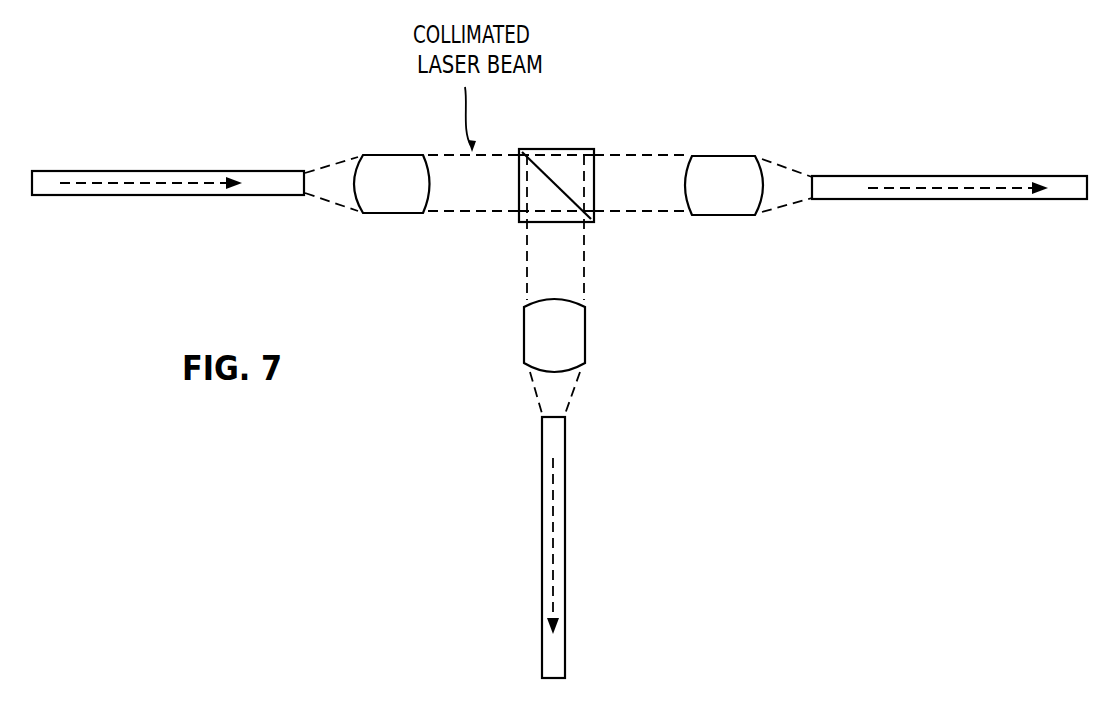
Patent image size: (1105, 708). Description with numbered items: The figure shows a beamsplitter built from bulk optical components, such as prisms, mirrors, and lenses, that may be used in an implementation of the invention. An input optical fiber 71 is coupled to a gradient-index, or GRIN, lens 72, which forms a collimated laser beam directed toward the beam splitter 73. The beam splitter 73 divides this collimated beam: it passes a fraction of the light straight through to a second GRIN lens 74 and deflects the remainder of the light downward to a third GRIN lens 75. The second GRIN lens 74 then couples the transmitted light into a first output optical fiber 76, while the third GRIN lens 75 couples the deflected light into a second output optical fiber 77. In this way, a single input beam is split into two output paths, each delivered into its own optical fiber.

The input optical fiber 71 is at (176, 165).
The gradient-index (GRIN) lens 72 is at (400, 219).
The beam splitter 73 is at (610, 149).
The second GRIN lens 74 is at (726, 222).
The third GRIN lens 75 is at (598, 344).
The first output optical fiber 76 is at (970, 170).
The second output optical fiber 77 is at (572, 510).